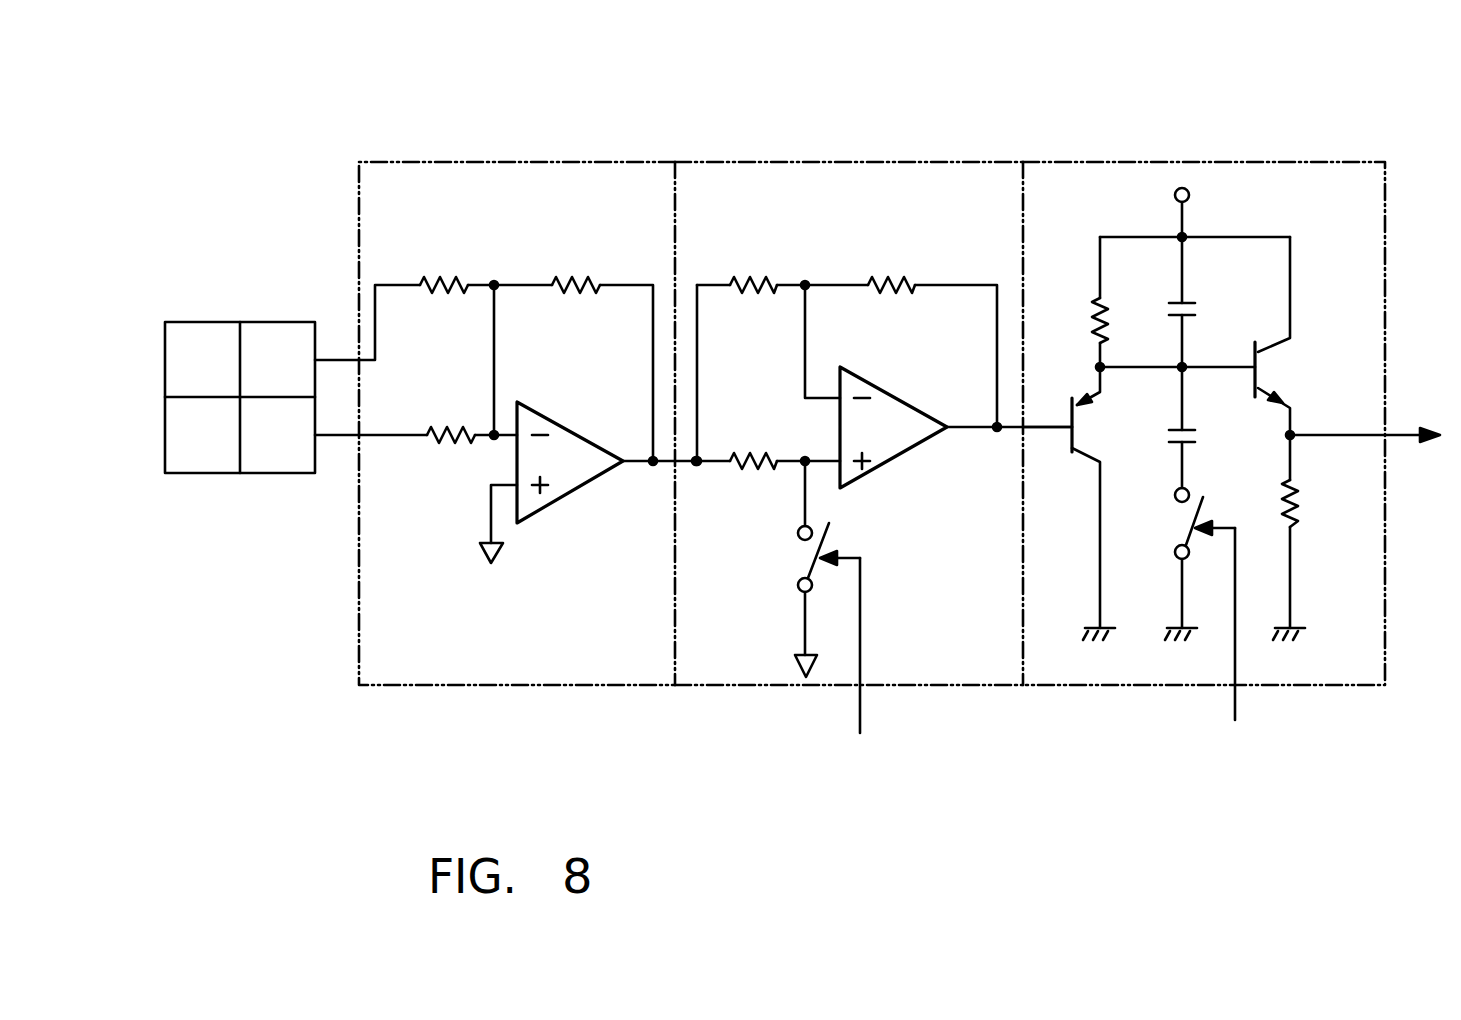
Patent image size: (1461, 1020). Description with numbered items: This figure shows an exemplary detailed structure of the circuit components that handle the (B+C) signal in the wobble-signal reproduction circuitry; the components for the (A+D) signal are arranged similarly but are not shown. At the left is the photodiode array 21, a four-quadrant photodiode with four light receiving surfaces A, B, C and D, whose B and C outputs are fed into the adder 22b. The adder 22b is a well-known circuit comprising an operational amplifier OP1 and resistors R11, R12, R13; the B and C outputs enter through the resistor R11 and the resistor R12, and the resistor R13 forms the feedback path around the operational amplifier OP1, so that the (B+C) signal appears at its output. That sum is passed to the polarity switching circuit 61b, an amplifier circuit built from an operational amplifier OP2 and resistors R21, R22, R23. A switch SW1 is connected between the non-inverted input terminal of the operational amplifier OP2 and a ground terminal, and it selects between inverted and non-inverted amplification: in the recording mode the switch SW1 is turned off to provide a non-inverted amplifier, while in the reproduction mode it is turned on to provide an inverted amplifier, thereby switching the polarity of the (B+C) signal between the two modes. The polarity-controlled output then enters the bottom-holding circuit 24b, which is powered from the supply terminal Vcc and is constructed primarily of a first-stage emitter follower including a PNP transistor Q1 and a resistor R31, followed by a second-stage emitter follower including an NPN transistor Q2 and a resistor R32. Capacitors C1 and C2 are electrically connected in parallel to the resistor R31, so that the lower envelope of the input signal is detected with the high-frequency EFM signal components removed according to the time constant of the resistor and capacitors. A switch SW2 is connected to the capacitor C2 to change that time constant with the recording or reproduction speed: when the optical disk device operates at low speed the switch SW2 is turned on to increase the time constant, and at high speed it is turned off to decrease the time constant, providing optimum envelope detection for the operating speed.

The photodiode array 21 is at (208, 322).
The adder 22b is at (502, 162).
The polarity switching circuit 61b is at (845, 162).
The bottom-holding circuit 24b is at (1245, 163).
The resistor R11 is at (440, 266).
The resistor R12 is at (448, 416).
The resistor R13 is at (571, 264).
The operational amplifier OP1 is at (577, 488).
The resistor R21 is at (750, 267).
The resistor R22 is at (750, 443).
The resistor R23 is at (892, 266).
The operational amplifier OP2 is at (900, 398).
The switch SW1 is at (803, 550).
The supply voltage terminal Vcc is at (1212, 208).
The resistor R31 is at (1069, 302).
The capacitor C1 is at (1203, 302).
The capacitor C2 is at (1203, 427).
The switch SW2 is at (1187, 513).
The PNP transistor Q1 is at (1087, 457).
The NPN transistor Q2 is at (1288, 336).
The resistor R32 is at (1316, 537).